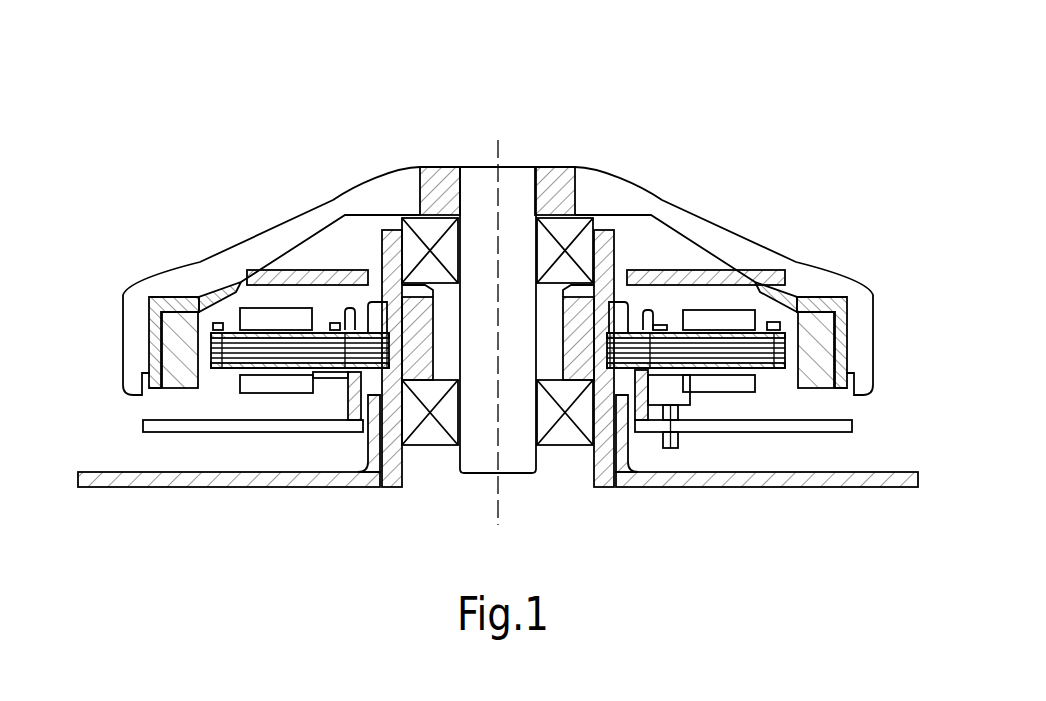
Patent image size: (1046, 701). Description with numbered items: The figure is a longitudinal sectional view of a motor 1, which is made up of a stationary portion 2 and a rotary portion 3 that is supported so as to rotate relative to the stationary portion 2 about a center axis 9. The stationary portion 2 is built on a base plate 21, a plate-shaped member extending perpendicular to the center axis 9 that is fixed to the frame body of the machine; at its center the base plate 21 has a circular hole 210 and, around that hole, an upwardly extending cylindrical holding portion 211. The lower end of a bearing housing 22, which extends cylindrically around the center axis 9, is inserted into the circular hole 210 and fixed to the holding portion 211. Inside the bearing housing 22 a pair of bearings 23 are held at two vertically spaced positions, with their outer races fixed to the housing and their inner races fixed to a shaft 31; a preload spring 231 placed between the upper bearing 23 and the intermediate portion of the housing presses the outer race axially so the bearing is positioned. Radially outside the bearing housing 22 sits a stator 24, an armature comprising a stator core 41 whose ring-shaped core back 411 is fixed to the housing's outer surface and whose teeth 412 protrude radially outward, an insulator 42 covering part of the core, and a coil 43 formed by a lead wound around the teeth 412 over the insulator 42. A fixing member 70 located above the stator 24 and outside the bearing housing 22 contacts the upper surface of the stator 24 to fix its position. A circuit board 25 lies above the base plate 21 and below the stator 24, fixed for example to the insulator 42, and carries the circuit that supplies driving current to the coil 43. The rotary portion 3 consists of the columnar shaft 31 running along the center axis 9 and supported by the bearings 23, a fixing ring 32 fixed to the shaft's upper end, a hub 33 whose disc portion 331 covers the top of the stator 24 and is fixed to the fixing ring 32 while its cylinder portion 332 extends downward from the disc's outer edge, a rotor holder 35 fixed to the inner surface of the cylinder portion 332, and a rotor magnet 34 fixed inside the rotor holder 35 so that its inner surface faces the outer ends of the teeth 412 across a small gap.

The motor 1 is at (420, 84).
The stationary portion 2 is at (712, 497).
The rotary portion 3 is at (893, 304).
The center axis 9 is at (498, 153).
The base plate 21 is at (265, 478).
The bearing housing 22 is at (605, 460).
The bearings 23 is at (577, 232).
The stator 24 is at (743, 150).
The circuit board 25 is at (767, 423).
The shaft 31 is at (486, 182).
The fixing ring 32 is at (432, 185).
The hub 33 is at (50, 160).
The rotor magnet 34 is at (178, 345).
The rotor holder 35 is at (293, 273).
The stator core 41 is at (770, 322).
The insulator 42 is at (650, 332).
The coil 43 is at (737, 313).
The fixing member 70 is at (380, 297).
The circular hole 210 is at (445, 468).
The holding portion 211 is at (373, 445).
The preload spring 231 is at (578, 305).
The disc portion 331 is at (222, 266).
The cylinder portion 332 is at (138, 332).
The core back 411 is at (360, 348).
The teeth 412 is at (263, 385).